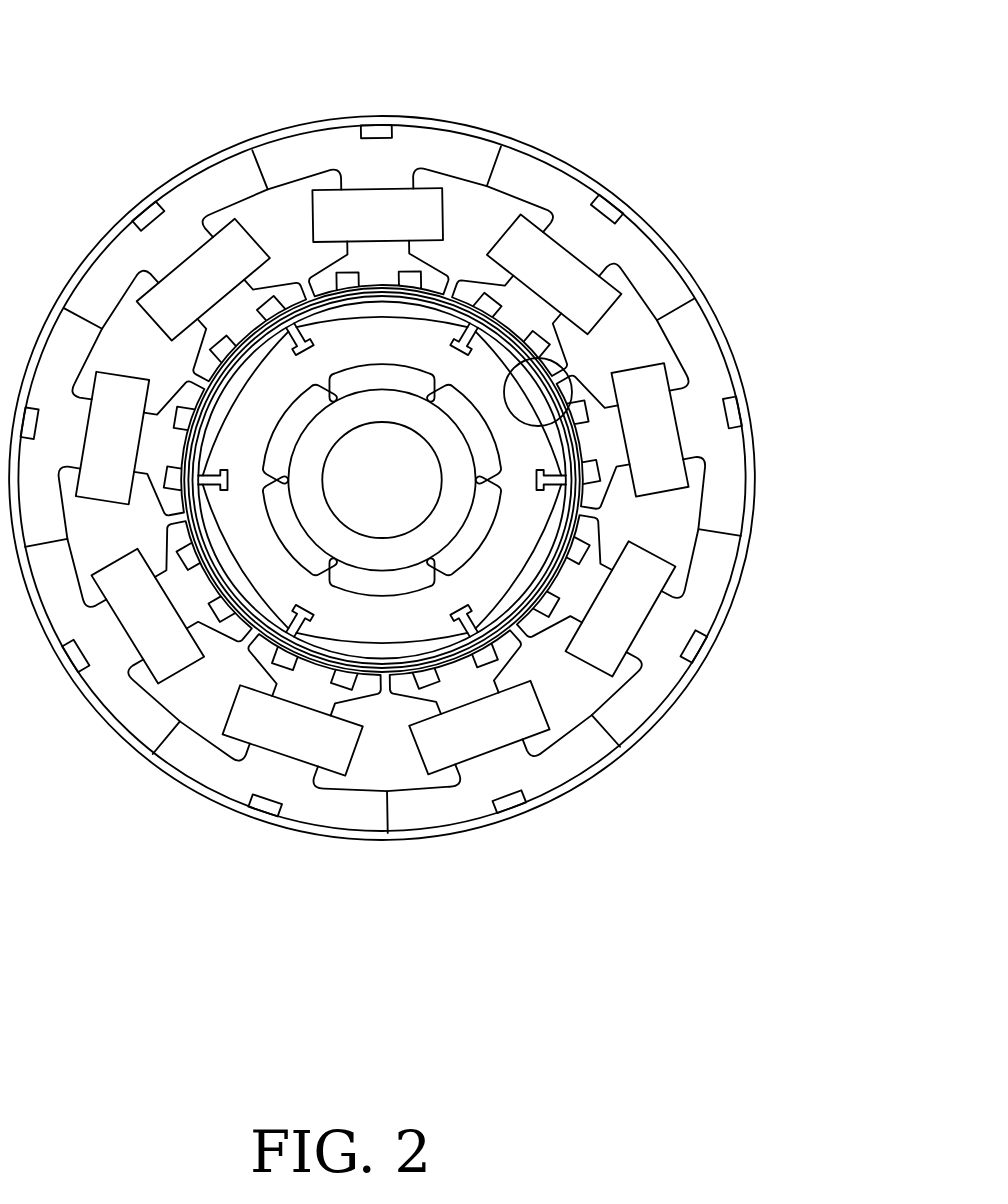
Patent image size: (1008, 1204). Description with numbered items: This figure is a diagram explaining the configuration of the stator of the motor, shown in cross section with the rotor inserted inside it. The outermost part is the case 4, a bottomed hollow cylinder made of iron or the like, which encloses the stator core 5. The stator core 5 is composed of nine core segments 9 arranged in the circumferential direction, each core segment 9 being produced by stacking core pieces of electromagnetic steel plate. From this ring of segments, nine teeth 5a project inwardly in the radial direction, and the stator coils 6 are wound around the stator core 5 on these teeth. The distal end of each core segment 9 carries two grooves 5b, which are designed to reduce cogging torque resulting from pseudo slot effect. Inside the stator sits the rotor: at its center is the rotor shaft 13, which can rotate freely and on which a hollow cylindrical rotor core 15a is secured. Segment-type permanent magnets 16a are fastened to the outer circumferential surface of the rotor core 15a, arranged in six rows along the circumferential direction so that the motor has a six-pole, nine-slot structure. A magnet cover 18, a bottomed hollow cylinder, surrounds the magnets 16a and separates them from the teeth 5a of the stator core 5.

The case 4 is at (667, 248).
The stator core 5 is at (451, 432).
The teeth 5a is at (563, 345).
The grooves 5b is at (457, 297).
The stator coils 6 is at (563, 280).
The core segments 9 is at (542, 178).
The rotor shaft 13 is at (407, 512).
The rotor core 15a is at (385, 625).
The magnet 16a is at (350, 655).
The magnet cover 18 is at (580, 510).